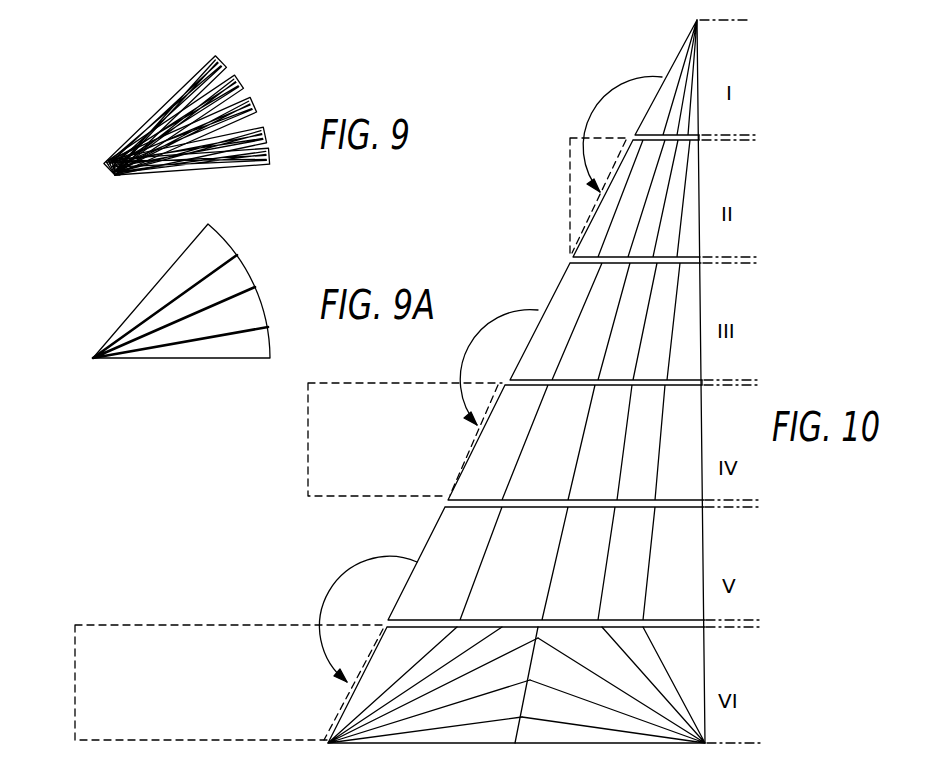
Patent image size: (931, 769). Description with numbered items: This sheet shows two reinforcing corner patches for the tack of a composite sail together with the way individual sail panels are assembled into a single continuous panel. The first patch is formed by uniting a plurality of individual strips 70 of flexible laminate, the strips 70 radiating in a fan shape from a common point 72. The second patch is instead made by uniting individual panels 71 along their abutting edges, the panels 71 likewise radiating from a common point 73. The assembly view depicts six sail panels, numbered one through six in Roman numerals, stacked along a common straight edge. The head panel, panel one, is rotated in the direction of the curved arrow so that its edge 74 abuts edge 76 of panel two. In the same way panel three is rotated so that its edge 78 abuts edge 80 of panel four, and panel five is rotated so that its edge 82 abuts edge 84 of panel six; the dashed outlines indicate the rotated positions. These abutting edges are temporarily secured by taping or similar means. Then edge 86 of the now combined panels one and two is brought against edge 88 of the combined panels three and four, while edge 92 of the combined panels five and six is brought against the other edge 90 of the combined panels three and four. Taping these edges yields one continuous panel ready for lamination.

In FIG. 9, the individual strips 70 is at (248, 80).
In FIG. 9, the common point 72 is at (112, 154).
In FIG. 9A, the individual panels 71 is at (253, 265).
In FIG. 9A, the common point 73 is at (92, 358).
In FIG. 10, the edge of panel I 74 is at (667, 70).
In FIG. 10, the edge of panel II 76 is at (600, 198).
In FIG. 10, the edge of panel III 78 is at (548, 300).
In FIG. 10, the edge of panel IV 80 is at (475, 438).
In FIG. 10, the edge of panel V 82 is at (428, 547).
In FIG. 10, the edge of panel VI 84 is at (348, 692).
In FIG. 10, the edge of combined panels I and II 86 is at (703, 178).
In FIG. 10, the edge of combined panels III and IV 88 is at (306, 450).
In FIG. 10, the other edge of combined panels III and IV 90 is at (703, 436).
In FIG. 10, the edge of combined panels V and VI 92 is at (78, 624).